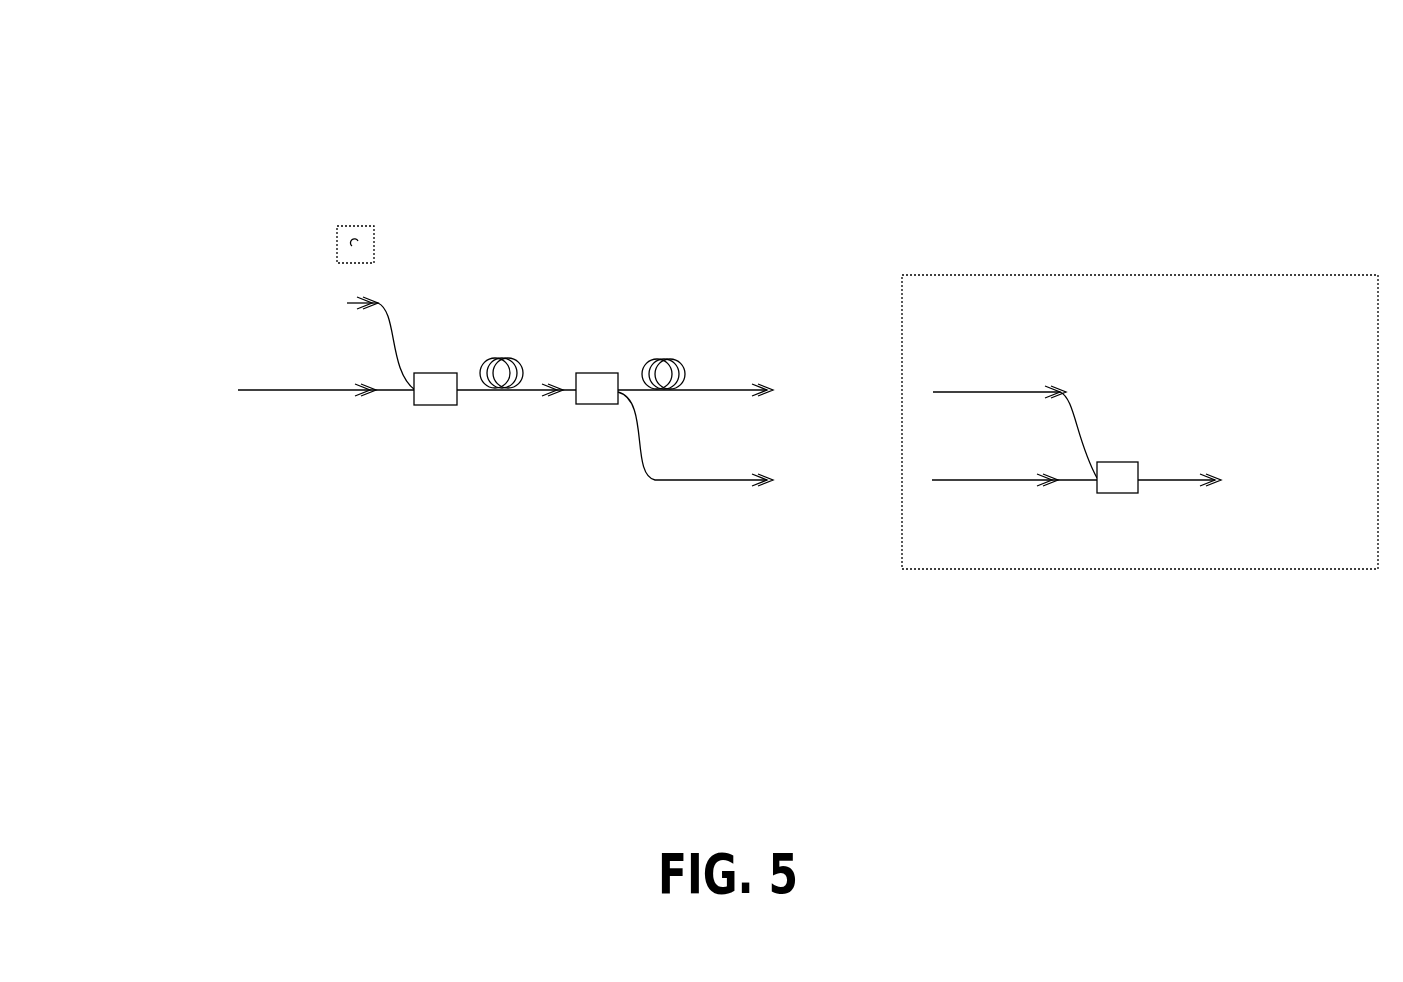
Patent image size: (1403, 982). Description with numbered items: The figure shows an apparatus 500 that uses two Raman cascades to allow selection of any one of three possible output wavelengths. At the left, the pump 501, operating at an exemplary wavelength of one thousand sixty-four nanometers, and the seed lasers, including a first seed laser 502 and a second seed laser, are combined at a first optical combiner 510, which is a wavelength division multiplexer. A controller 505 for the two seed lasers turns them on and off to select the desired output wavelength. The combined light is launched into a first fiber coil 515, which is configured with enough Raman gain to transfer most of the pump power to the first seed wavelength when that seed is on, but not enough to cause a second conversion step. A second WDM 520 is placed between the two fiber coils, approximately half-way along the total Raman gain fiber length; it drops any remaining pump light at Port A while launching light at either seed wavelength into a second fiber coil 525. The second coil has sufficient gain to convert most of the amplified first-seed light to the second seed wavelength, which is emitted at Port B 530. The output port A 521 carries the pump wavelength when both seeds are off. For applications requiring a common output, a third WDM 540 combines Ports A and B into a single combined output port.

The apparatus 500 is at (513, 150).
The pump 501 is at (277, 412).
The first seed laser 502 is at (282, 324).
The controller 505 is at (337, 227).
The first optical combiner 510 is at (432, 372).
The first fiber coil 515 is at (493, 357).
The second WDM 520 is at (602, 370).
The output port A (1064 nm) 521 is at (753, 464).
The second fiber coil 525 is at (658, 360).
The Port B 530 is at (755, 407).
The third WDM 540 is at (1119, 460).